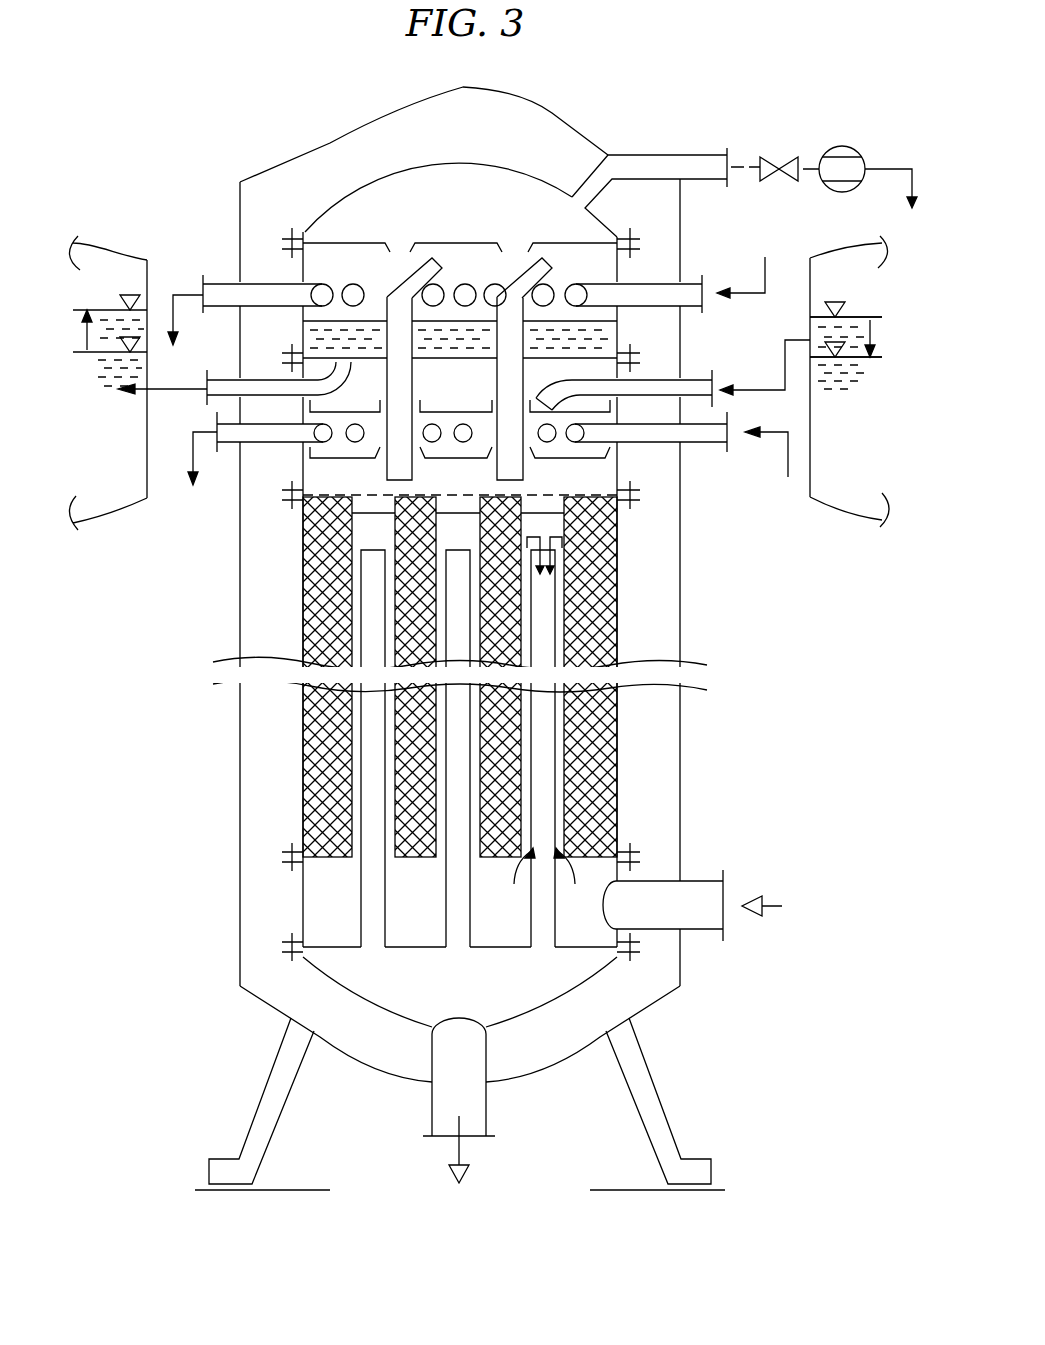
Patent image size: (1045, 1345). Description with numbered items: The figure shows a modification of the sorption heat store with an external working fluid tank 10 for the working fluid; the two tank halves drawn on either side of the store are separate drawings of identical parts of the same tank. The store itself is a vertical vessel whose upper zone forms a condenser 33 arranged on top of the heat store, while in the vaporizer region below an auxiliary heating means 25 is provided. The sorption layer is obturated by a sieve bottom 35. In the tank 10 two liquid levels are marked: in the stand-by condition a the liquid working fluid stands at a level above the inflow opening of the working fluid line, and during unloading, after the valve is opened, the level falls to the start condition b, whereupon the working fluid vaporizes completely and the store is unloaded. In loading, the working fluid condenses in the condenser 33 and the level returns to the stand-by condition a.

The working fluid tank 10 is at (850, 545).
The condenser 33 is at (407, 332).
The auxiliary heating means 25 is at (647, 433).
The sieve bottom 35 is at (528, 408).
The stand-by condition a is at (880, 317).
The start condition b is at (880, 357).